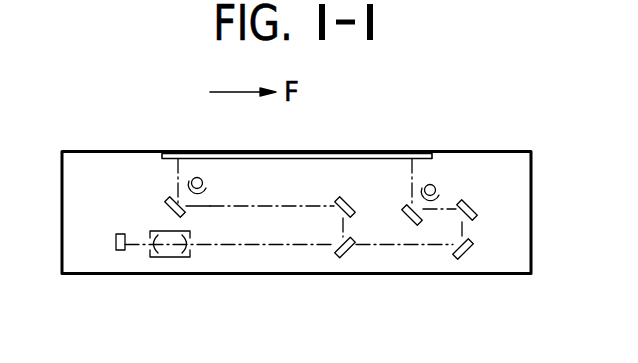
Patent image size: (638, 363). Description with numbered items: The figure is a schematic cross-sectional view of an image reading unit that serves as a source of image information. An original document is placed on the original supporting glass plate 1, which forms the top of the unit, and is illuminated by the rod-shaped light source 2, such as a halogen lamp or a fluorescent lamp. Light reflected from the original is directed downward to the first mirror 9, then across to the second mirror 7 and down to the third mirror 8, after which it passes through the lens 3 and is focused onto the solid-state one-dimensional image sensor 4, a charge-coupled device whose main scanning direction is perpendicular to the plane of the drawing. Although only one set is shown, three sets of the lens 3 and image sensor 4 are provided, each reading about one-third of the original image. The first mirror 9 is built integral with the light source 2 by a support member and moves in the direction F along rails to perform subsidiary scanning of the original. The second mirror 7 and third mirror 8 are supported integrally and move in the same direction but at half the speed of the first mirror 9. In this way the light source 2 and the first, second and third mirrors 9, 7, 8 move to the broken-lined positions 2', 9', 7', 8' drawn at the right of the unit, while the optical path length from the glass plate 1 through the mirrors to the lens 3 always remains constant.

The original supporting glass plate 1 is at (356, 152).
The rod-shaped light source 2 is at (219, 181).
The broken-lined position of the light source 2' is at (454, 178).
The lens 3 is at (154, 246).
The solid-state one-dimensional image sensor 4 is at (121, 233).
The second mirror 7 is at (357, 189).
The broken-lined position of the second mirror 7' is at (487, 196).
The third mirror 8 is at (364, 258).
The broken-lined position of the third mirror 8' is at (487, 254).
The first mirror 9 is at (161, 184).
The broken-lined position of the first mirror 9' is at (395, 222).